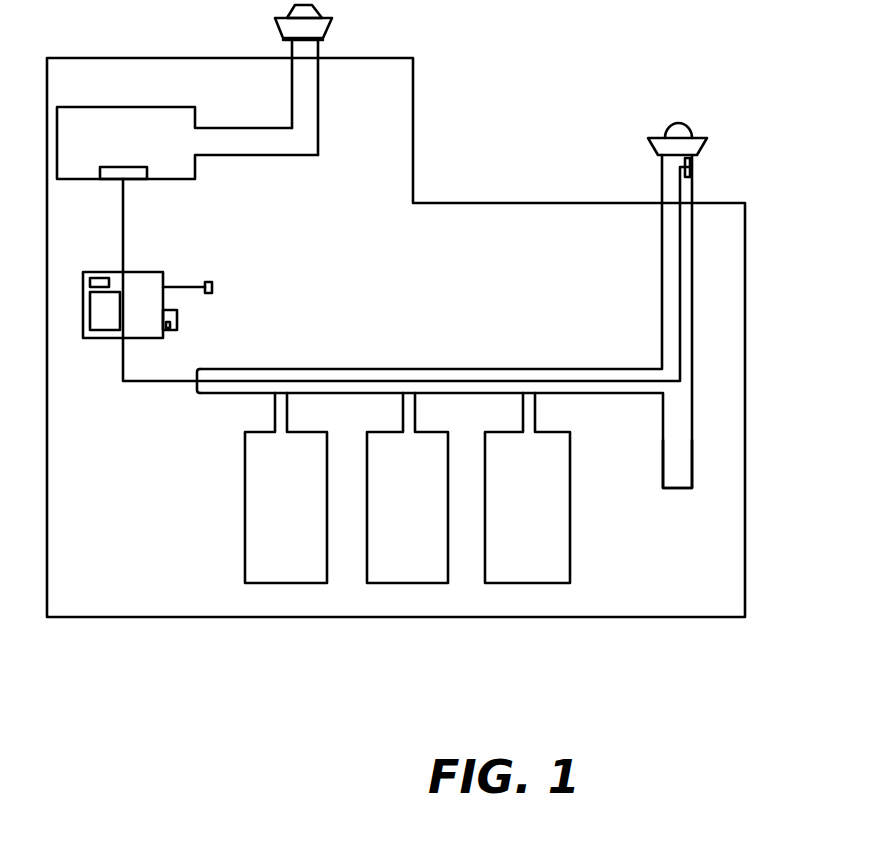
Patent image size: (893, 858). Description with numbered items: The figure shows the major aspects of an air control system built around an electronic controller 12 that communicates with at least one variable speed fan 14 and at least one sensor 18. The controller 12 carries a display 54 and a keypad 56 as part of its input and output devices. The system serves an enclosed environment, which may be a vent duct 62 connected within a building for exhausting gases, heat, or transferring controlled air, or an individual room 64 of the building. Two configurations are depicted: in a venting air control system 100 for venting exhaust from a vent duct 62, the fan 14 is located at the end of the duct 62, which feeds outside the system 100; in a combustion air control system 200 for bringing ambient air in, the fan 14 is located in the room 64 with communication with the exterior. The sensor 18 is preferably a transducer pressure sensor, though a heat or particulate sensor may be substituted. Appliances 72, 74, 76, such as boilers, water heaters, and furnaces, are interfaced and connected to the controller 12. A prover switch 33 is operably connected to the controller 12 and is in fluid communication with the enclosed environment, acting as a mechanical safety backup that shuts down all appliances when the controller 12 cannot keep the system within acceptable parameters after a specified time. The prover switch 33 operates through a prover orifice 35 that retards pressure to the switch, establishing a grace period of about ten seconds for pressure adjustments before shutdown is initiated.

The electronic controller 12 is at (148, 275).
The variable speed fan 14 is at (132, 173).
The sensor 18 is at (212, 287).
The prover switch 33 is at (177, 315).
The prover orifice 35 is at (170, 325).
The display 54 is at (98, 278).
The keypad 56 is at (98, 330).
The vent duct 62 is at (682, 470).
The room 64 is at (289, 228).
The appliance 72 is at (267, 583).
The appliance 74 is at (392, 583).
The appliance 76 is at (508, 583).
The venting air control system 100 is at (130, 107).
The combustion air control system 200 is at (678, 408).